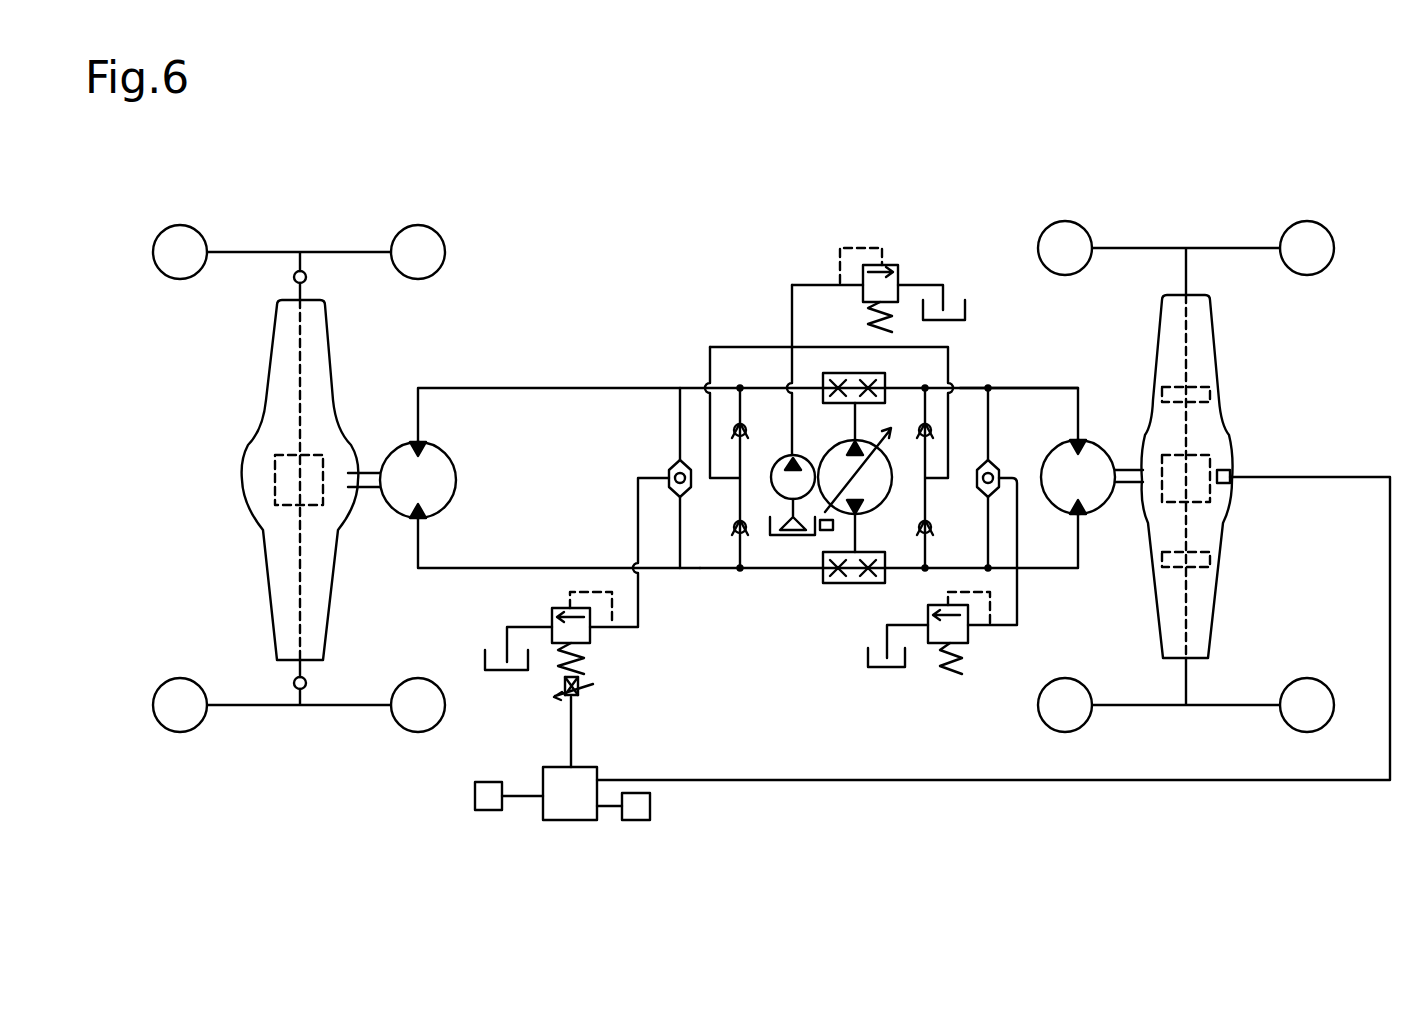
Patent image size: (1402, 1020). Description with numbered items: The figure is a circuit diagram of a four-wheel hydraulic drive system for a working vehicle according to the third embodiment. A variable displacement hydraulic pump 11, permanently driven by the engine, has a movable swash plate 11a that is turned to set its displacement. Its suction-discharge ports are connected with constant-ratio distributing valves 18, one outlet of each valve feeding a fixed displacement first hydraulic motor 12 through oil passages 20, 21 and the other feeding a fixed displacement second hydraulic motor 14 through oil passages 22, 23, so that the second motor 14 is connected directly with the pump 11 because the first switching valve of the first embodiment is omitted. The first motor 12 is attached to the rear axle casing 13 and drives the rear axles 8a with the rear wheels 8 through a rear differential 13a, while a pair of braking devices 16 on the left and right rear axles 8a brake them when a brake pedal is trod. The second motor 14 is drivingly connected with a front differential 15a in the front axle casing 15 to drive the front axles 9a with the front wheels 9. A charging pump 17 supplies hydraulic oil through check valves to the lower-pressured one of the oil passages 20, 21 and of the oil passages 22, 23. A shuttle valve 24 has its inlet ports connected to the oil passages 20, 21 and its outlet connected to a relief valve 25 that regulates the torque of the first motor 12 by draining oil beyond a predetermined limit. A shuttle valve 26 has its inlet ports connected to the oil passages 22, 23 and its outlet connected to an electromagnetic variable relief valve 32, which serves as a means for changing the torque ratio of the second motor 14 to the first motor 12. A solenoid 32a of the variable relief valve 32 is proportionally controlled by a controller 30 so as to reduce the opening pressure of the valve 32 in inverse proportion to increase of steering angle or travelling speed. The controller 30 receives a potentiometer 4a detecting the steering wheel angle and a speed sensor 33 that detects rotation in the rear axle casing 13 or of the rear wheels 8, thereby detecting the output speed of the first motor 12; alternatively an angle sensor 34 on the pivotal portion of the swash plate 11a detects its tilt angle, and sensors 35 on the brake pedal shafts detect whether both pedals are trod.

The potentiometer 4a is at (475, 798).
The rear wheels 8 is at (1320, 276).
The rear axles 8a is at (1186, 272).
The front wheels 9 is at (440, 236).
The front axles 9a is at (293, 277).
The variable displacement hydraulic pump 11 is at (823, 460).
The movable swash plate 11a is at (900, 425).
The first hydraulic motor 12 is at (1108, 508).
The rear axle casing 13 is at (1230, 523).
The rear differential 13a is at (1186, 478).
The second hydraulic motor 14 is at (457, 462).
The front axle casing 15 is at (250, 447).
The front differential 15a is at (275, 480).
The braking devices 16 is at (1213, 395).
The charging pump 17 is at (777, 460).
The constant-ratio distributing valves 18 is at (875, 373).
The oil passage 20 is at (1040, 388).
The oil passage 21 is at (1060, 568).
The oil passage 22 is at (545, 388).
The oil passage 23 is at (490, 568).
The shuttle valve 24 is at (1000, 462).
The relief valve 25 is at (968, 636).
The shuttle valve 26 is at (675, 460).
The controller 30 is at (548, 767).
The electromagnetic variable relief valve 32 is at (592, 640).
The solenoid 32a is at (595, 690).
The speed sensor 33 is at (1232, 475).
The angle sensor 34 is at (826, 532).
The sensors 35 is at (650, 815).